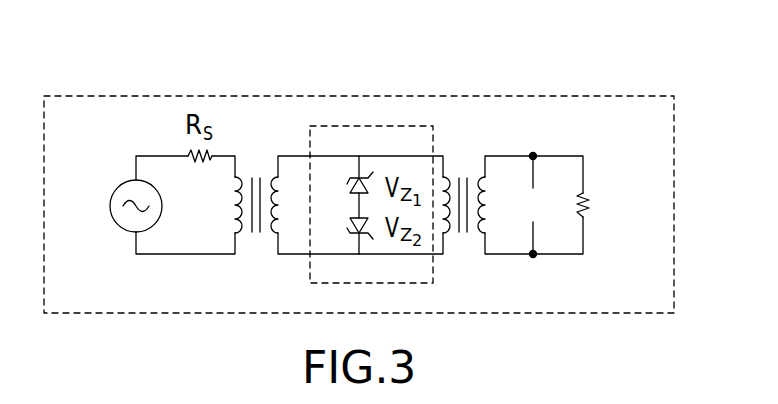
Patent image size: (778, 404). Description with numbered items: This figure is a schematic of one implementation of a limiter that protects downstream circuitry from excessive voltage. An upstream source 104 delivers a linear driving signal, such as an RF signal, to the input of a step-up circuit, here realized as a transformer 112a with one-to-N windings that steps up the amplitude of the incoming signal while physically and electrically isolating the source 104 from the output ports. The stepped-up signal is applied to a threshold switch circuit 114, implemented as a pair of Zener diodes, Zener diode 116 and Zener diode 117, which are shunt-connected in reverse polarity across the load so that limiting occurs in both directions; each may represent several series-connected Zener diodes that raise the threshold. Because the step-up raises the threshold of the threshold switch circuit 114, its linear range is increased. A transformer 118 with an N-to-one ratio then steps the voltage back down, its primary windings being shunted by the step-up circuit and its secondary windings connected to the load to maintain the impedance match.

The source 104 is at (127, 180).
The transformer 112a is at (259, 96).
The threshold switch circuit 114 is at (356, 126).
The Zener diode 116 is at (355, 187).
The Zener diode 117 is at (348, 226).
The transformer 118 is at (508, 105).